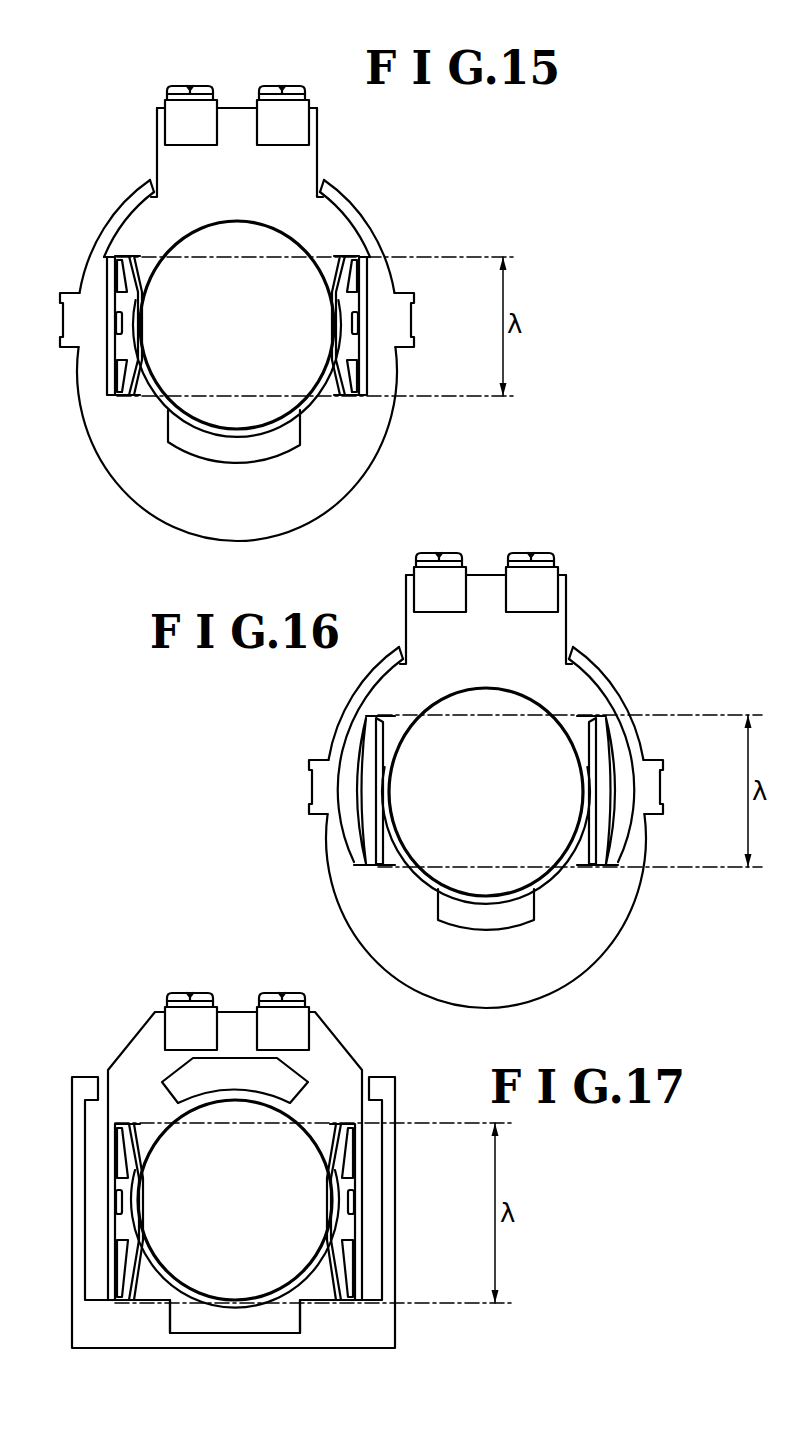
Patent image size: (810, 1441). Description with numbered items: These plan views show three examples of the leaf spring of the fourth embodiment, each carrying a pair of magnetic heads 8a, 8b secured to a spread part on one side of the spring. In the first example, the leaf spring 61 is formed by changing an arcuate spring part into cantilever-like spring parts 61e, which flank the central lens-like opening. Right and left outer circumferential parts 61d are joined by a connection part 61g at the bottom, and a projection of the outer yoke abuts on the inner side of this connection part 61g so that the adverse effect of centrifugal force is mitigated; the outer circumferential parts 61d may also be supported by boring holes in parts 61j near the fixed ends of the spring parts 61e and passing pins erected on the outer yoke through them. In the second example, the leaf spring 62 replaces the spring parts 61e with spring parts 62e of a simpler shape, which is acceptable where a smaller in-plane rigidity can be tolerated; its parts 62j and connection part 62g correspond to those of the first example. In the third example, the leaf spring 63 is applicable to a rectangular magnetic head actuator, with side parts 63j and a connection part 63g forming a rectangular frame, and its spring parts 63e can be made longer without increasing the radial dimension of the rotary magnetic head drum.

In FIG. 15, the magnetic head 8a is at (188, 86).
In FIG. 16, the magnetic head 8a is at (440, 553).
In FIG. 17, the magnetic head 8a is at (181, 992).
In FIG. 15, the magnetic head 8b is at (278, 86).
In FIG. 16, the magnetic head 8b is at (514, 553).
In FIG. 17, the magnetic head 8b is at (270, 992).
In FIG. 15, the leaf spring 61 is at (308, 237).
In FIG. 15, the outer circumferential part 61d is at (75, 372).
In FIG. 15, the spring part 61e is at (108, 277).
In FIG. 15, the part near fixed end of spring part 61j is at (148, 420).
In FIG. 15, the connection part 61g is at (229, 482).
In FIG. 16, the leaf spring 62 is at (558, 698).
In FIG. 16, the spring part 62e is at (365, 750).
In FIG. 16, the part near fixed end of spring part 62j is at (403, 887).
In FIG. 16, the connection part 62g is at (497, 942).
In FIG. 17, the leaf spring 63 is at (317, 1094).
In FIG. 17, the spring part 63e is at (115, 1148).
In FIG. 17, the part near fixed end of spring part 63j is at (137, 1323).
In FIG. 17, the connection part 63g is at (240, 1340).